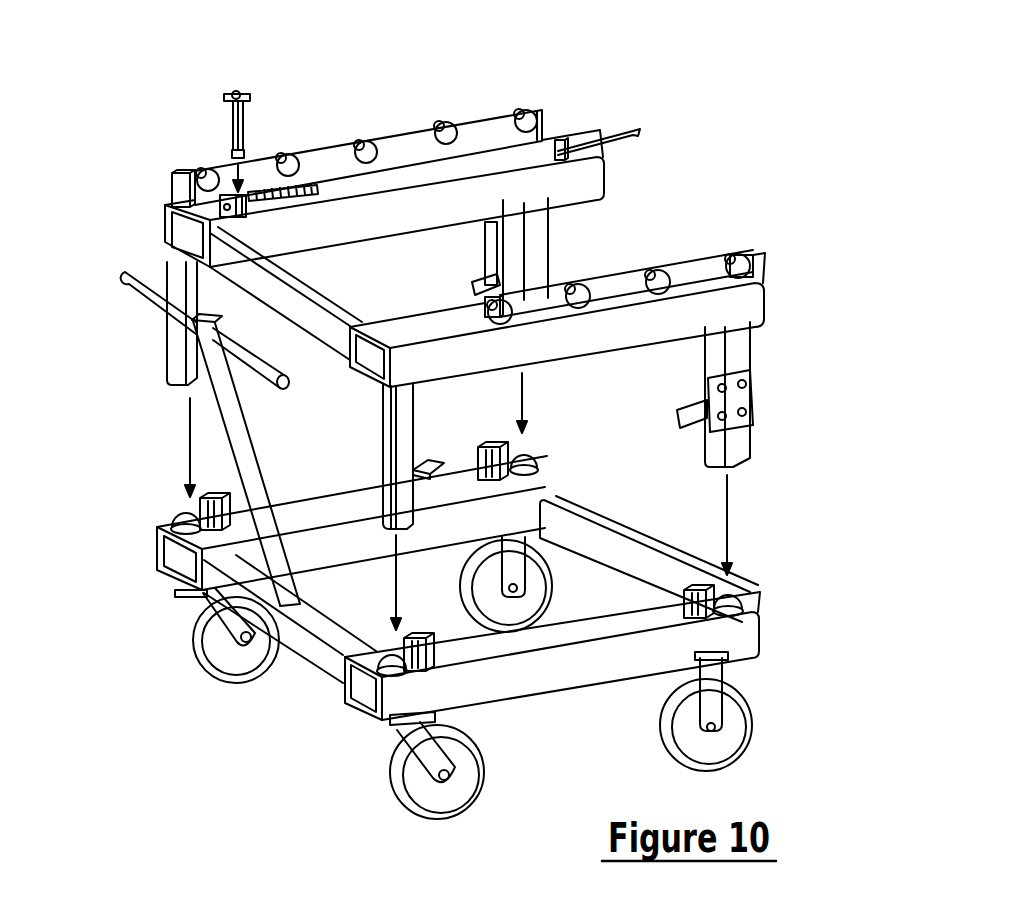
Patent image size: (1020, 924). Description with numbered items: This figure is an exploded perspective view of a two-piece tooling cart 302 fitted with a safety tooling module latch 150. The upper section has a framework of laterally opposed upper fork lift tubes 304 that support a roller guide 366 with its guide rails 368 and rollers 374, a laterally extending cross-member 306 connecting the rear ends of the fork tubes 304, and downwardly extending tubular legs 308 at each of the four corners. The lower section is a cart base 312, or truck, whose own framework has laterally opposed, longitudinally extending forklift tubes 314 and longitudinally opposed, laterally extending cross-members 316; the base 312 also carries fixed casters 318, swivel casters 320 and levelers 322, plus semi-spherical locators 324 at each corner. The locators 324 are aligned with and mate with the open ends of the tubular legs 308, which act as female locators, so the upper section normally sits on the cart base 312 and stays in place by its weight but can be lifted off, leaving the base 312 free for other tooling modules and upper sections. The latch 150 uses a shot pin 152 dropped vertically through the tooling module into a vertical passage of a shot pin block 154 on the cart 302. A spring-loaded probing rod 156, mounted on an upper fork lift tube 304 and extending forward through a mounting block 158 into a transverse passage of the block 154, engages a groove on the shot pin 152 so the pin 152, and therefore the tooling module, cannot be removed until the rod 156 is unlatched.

The tooling module latch 150 is at (170, 95).
The shot pin 152 is at (220, 130).
The shot pin block 154 is at (177, 217).
The probing rod 156 is at (632, 128).
The mounting block 158 is at (568, 152).
The tooling cart 302 is at (778, 122).
The upper fork lift tube 304 is at (557, 186).
The cross-member 306 is at (307, 287).
The tubular leg 308 is at (528, 251).
The cart base 312 is at (780, 632).
The forklift tube 314 is at (353, 543).
The cross-member 316 is at (599, 530).
The fixed caster 318 is at (537, 593).
The swivel caster 320 is at (217, 643).
The leveler 322 is at (195, 507).
The locator 324 is at (177, 521).
The roller guide 366 is at (548, 116).
The guide rail 368 is at (410, 150).
The roller 374 is at (290, 164).